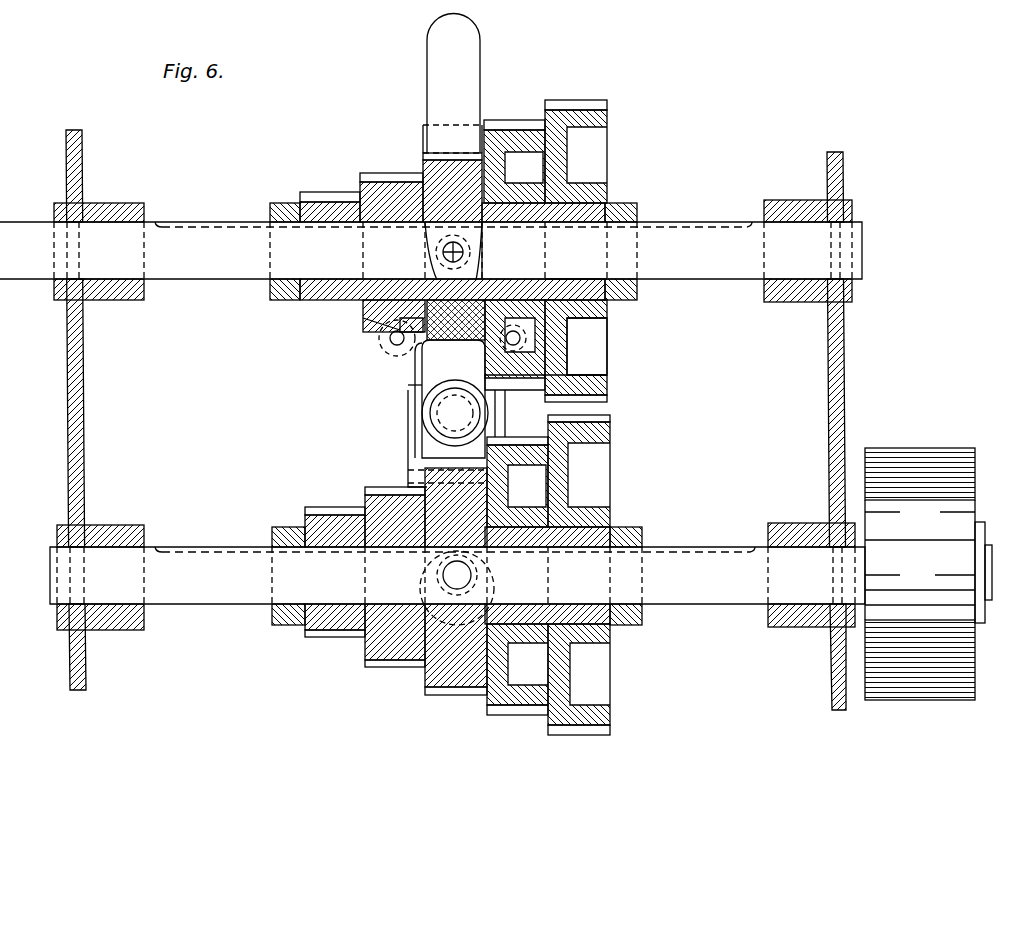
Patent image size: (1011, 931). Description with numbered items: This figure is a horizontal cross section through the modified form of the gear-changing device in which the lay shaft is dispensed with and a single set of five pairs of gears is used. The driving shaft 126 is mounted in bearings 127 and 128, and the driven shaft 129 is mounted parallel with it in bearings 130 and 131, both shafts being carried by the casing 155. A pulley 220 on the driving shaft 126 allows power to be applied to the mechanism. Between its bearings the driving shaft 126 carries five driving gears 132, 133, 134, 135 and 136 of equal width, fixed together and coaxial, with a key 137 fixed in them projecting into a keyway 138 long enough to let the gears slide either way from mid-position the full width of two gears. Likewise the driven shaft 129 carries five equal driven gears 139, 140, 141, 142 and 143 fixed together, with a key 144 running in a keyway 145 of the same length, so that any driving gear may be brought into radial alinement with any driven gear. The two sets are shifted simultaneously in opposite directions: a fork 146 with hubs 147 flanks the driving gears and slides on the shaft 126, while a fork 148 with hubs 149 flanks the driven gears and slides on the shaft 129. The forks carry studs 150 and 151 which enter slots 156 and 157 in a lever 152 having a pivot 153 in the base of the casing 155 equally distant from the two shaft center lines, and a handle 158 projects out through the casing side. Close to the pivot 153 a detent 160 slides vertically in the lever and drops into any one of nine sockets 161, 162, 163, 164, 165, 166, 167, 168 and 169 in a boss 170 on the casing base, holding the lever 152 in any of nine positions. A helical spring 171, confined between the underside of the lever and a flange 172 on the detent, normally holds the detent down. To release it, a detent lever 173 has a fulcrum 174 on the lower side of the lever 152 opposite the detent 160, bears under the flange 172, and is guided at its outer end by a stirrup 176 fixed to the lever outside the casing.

The driving shaft 126 is at (205, 597).
The bearing 127 is at (784, 630).
The bearing 128 is at (108, 628).
The driven shaft 129 is at (200, 279).
The bearing 130 is at (787, 290).
The bearing 131 is at (108, 300).
The driving gear 132 is at (578, 730).
The driving gear 133 is at (508, 712).
The driving gear 134 is at (445, 697).
The driving gear 135 is at (380, 668).
The driving gear 136 is at (330, 640).
The key 137 is at (600, 548).
The keyway 138 is at (680, 548).
The driven gear 139 is at (575, 103).
The driven gear 140 is at (513, 127).
The driven gear 141 is at (418, 153).
The driven gear 142 is at (370, 180).
The driven gear 143 is at (322, 200).
The key 144 is at (598, 216).
The keyway 145 is at (662, 225).
The fork 146 is at (617, 632).
The hub 147 is at (643, 617).
The fork 148 is at (607, 308).
The hub 149 is at (284, 301).
The stud 150 is at (468, 578).
The stud 151 is at (480, 262).
The lever 152 is at (437, 362).
The pivot 153 is at (455, 413).
The casing 155 is at (86, 432).
The slot 156 is at (507, 600).
The slot 157 is at (437, 232).
The handle 158 is at (466, 60).
The detent 160 is at (433, 350).
The socket 161 is at (389, 340).
The socket 162 is at (408, 323).
The socket 163 is at (410, 322).
The socket 164 is at (432, 318).
The socket 165 is at (442, 341).
The socket 166 is at (515, 278).
The socket 167 is at (542, 281).
The socket 168 is at (512, 318).
The socket 169 is at (567, 327).
The boss 170 is at (575, 358).
The helical spring 171 is at (512, 379).
The flange 172 is at (418, 380).
The detent lever 173 is at (395, 357).
The fulcrum 174 is at (407, 478).
The stirrup 176 is at (432, 128).
The pulley 220 is at (898, 457).